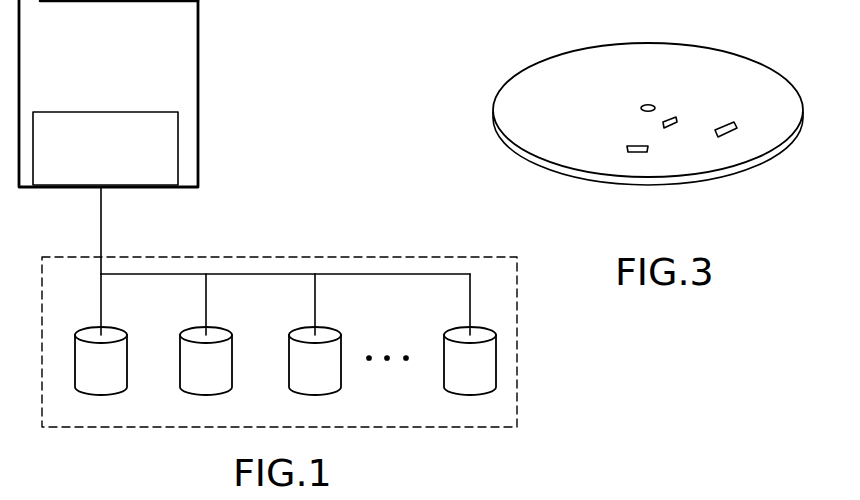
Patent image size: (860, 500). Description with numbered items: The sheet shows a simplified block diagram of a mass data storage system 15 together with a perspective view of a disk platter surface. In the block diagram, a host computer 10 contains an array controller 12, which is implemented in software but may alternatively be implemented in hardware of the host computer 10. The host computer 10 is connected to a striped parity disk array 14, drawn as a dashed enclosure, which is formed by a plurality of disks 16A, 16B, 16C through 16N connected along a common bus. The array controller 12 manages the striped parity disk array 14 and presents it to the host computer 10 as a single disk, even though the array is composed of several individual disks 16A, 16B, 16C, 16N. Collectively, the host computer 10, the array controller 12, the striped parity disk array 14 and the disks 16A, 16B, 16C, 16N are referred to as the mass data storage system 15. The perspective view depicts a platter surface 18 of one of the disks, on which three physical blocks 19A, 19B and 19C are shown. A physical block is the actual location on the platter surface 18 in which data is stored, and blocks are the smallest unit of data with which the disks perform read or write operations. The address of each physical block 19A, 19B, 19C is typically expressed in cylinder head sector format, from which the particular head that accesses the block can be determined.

In FIG. 1, the host computer 10 is at (198, 50).
In FIG. 1, the array controller 12 is at (178, 158).
In FIG. 1, the striped parity disk array 14 is at (340, 257).
In FIG. 1, the mass data storage system 15 is at (296, 128).
In FIG. 1, the disk 16A is at (84, 376).
In FIG. 1, the disk 16B is at (189, 376).
In FIG. 1, the disk 16C is at (298, 376).
In FIG. 1, the disk 16N is at (453, 376).
In FIG. 3, the platter surface 18 is at (538, 163).
In FIG. 3, the physical block 19A is at (640, 152).
In FIG. 3, the physical block 19B is at (670, 128).
In FIG. 3, the physical block 19C is at (727, 135).